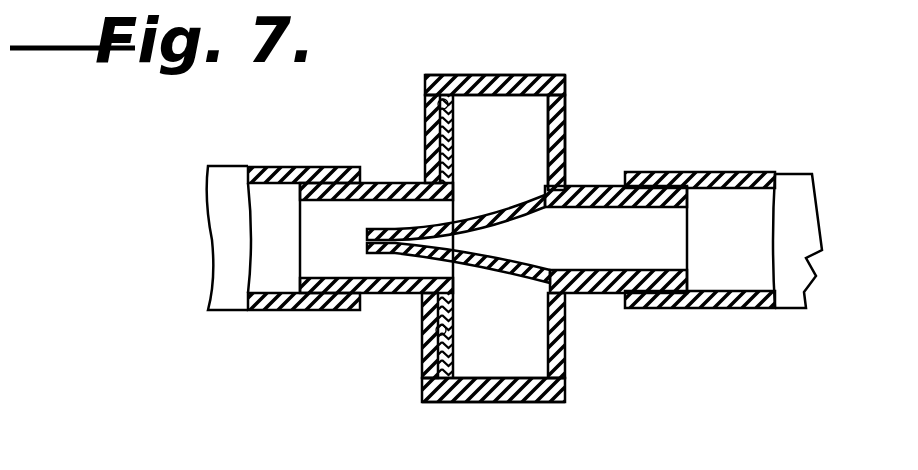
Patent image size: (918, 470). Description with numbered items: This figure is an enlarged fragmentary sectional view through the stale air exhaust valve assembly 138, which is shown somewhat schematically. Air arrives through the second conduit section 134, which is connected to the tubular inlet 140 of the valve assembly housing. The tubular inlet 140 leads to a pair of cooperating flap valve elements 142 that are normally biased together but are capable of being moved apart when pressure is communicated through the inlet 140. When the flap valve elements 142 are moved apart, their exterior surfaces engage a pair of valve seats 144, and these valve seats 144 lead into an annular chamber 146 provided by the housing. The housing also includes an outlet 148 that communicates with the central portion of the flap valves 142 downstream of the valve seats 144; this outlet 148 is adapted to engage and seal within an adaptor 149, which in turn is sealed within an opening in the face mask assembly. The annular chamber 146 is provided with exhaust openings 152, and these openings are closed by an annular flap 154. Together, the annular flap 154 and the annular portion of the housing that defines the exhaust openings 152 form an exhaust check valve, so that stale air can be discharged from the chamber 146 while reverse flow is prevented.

The second conduit section 134 is at (790, 173).
The stale air exhaust valve assembly 138 is at (535, 73).
The tubular inlet 140 is at (596, 178).
The flap valve elements 142 is at (435, 236).
The valve seats 144 is at (455, 203).
The annular chamber 146 is at (548, 140).
The outlet 148 is at (397, 182).
The adaptor 149 is at (280, 167).
The exhaust openings 152 is at (468, 92).
The annular flap 154 is at (426, 90).